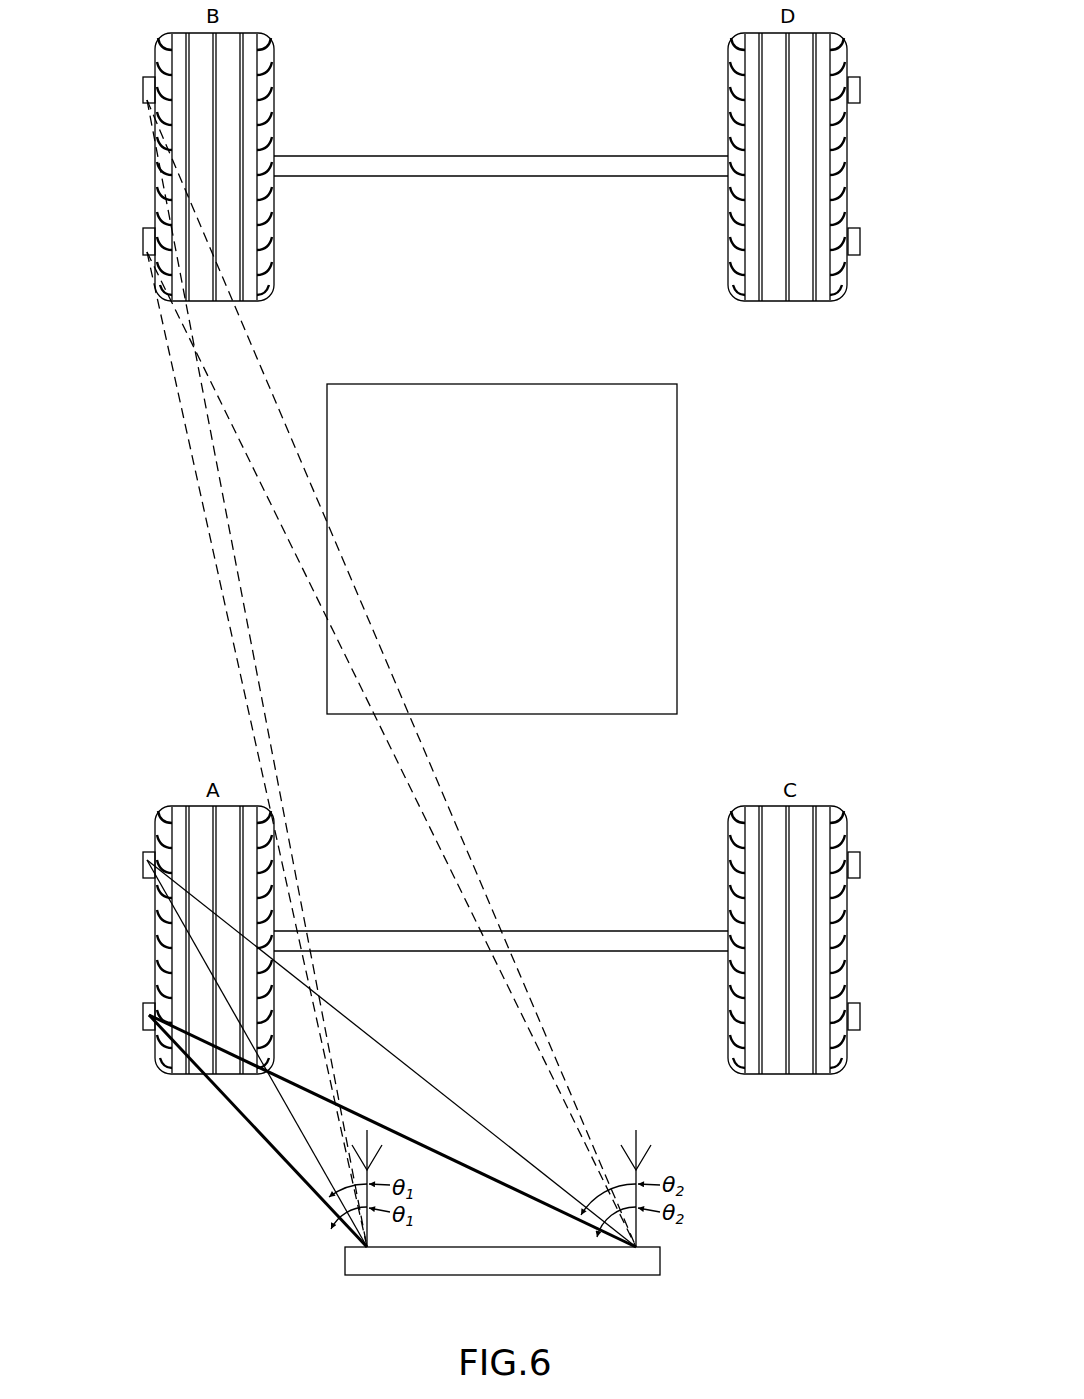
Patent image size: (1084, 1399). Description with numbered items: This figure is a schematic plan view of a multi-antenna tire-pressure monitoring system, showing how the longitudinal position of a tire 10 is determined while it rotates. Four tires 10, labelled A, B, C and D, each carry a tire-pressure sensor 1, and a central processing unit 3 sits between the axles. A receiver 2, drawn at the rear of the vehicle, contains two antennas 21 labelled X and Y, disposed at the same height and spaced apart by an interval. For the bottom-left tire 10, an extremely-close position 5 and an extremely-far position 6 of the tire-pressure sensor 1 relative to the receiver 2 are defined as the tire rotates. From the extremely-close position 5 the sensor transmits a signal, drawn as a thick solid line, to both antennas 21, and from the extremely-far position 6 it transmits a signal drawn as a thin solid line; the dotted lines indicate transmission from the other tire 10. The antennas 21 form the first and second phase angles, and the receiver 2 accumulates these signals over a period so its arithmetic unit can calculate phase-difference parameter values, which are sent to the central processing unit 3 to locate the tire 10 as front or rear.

The tire-pressure sensor 1 is at (501, 562).
The receiver 2 is at (343, 1253).
The central processing unit 3 is at (473, 384).
The extremely-close position 5 is at (140, 263).
The extremely-far position 6 is at (148, 72).
The tire 10 is at (220, 310).
The antenna 21 is at (380, 1137).